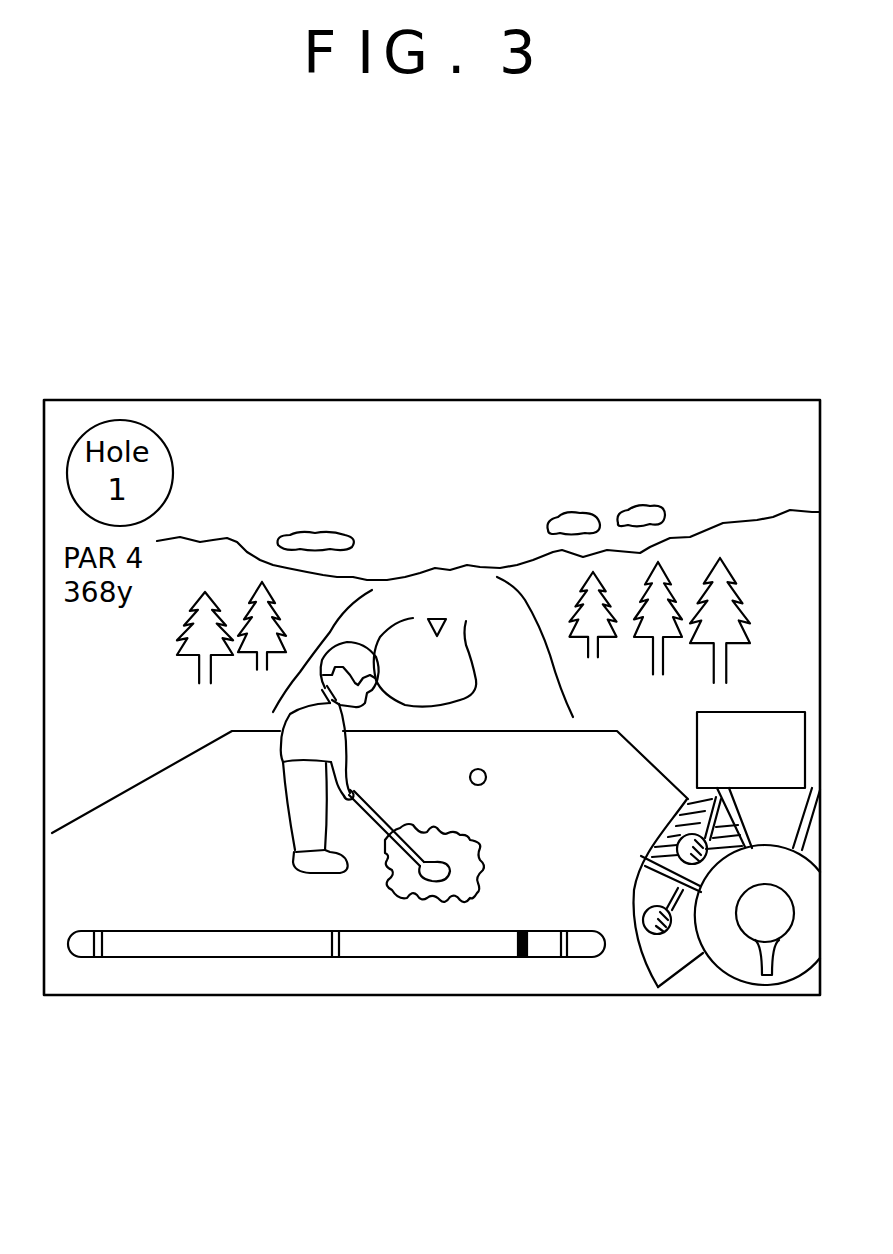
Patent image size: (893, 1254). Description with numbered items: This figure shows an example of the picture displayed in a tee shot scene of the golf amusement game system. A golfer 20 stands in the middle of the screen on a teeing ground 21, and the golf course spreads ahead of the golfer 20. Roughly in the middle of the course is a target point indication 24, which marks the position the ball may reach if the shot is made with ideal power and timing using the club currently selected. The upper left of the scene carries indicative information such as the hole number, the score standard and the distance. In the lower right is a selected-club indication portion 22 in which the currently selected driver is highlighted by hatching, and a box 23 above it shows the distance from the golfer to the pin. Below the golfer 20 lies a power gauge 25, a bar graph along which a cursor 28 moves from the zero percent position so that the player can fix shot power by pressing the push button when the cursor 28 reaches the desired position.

The golfer 20 is at (287, 752).
The teeing ground 21 is at (186, 827).
The selected-club indication portion 22 is at (631, 955).
The box 23 is at (758, 713).
The target point indication 24 is at (433, 580).
The power gauge 25 is at (222, 930).
The cursor 28 is at (522, 931).